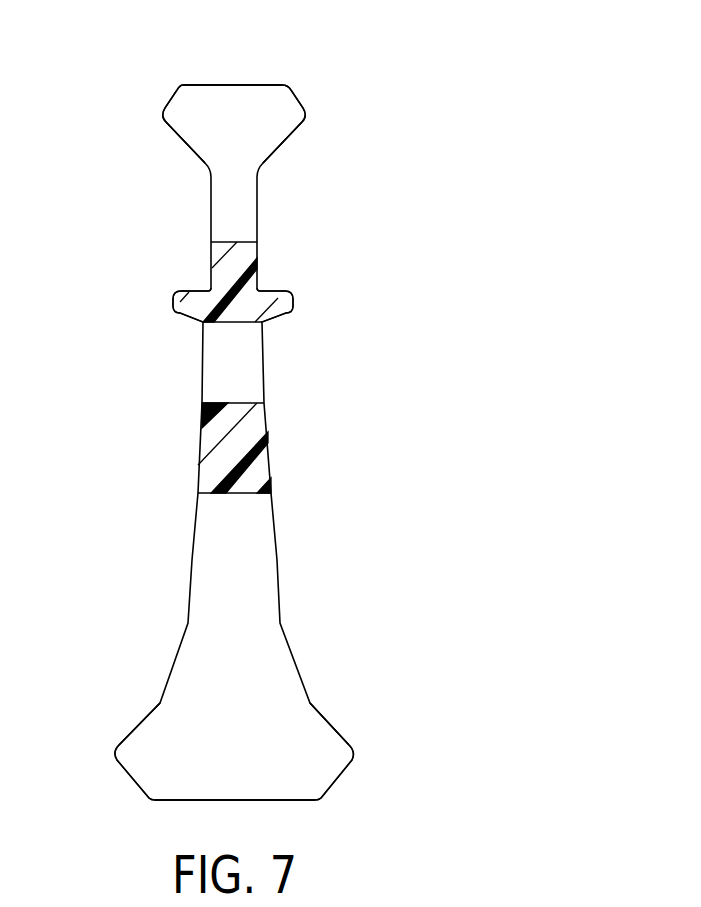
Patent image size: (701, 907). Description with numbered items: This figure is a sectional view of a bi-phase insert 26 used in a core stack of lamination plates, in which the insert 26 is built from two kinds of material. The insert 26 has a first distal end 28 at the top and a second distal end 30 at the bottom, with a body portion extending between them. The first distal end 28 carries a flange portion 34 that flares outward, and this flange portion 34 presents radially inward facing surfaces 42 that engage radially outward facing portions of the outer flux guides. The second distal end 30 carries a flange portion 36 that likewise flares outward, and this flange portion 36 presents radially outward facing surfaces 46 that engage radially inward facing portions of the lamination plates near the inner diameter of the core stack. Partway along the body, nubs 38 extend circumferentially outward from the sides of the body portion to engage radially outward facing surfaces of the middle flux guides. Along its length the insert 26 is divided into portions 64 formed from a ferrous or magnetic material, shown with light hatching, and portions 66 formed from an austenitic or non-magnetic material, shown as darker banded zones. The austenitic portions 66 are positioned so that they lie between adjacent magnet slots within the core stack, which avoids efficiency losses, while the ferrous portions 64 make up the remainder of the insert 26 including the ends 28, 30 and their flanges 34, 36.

The insert 26 is at (150, 490).
The first distal end 28 is at (234, 85).
The second distal end 30 is at (233, 800).
The flange portion 34 is at (232, 110).
The flange portion 36 is at (233, 758).
The nubs 38 is at (190, 300).
The radially inward facing surfaces 42 is at (183, 148).
The radially outward facing surfaces 46 is at (137, 723).
The ferrous portions 64 is at (234, 200).
The austenitic portions 66 is at (228, 265).